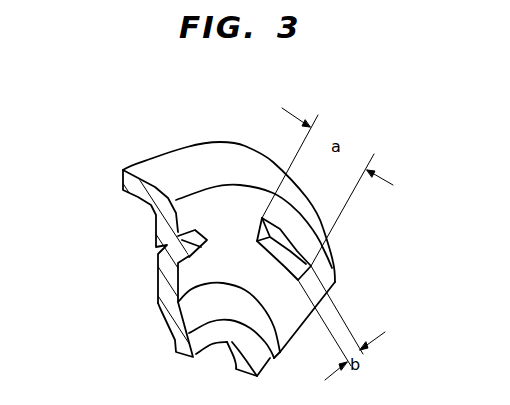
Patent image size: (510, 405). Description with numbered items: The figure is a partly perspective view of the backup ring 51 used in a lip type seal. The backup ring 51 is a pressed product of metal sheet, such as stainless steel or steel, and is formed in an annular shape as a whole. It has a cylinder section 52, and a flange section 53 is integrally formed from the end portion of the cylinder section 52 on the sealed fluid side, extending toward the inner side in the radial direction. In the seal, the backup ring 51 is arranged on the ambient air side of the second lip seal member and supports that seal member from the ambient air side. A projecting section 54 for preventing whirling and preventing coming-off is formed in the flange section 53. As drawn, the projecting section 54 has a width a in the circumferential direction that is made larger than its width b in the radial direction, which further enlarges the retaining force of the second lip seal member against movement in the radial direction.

The backup ring 51 is at (130, 158).
The cylinder section 52 is at (143, 191).
The flange section 53 is at (163, 300).
The projecting section 54 is at (194, 246).